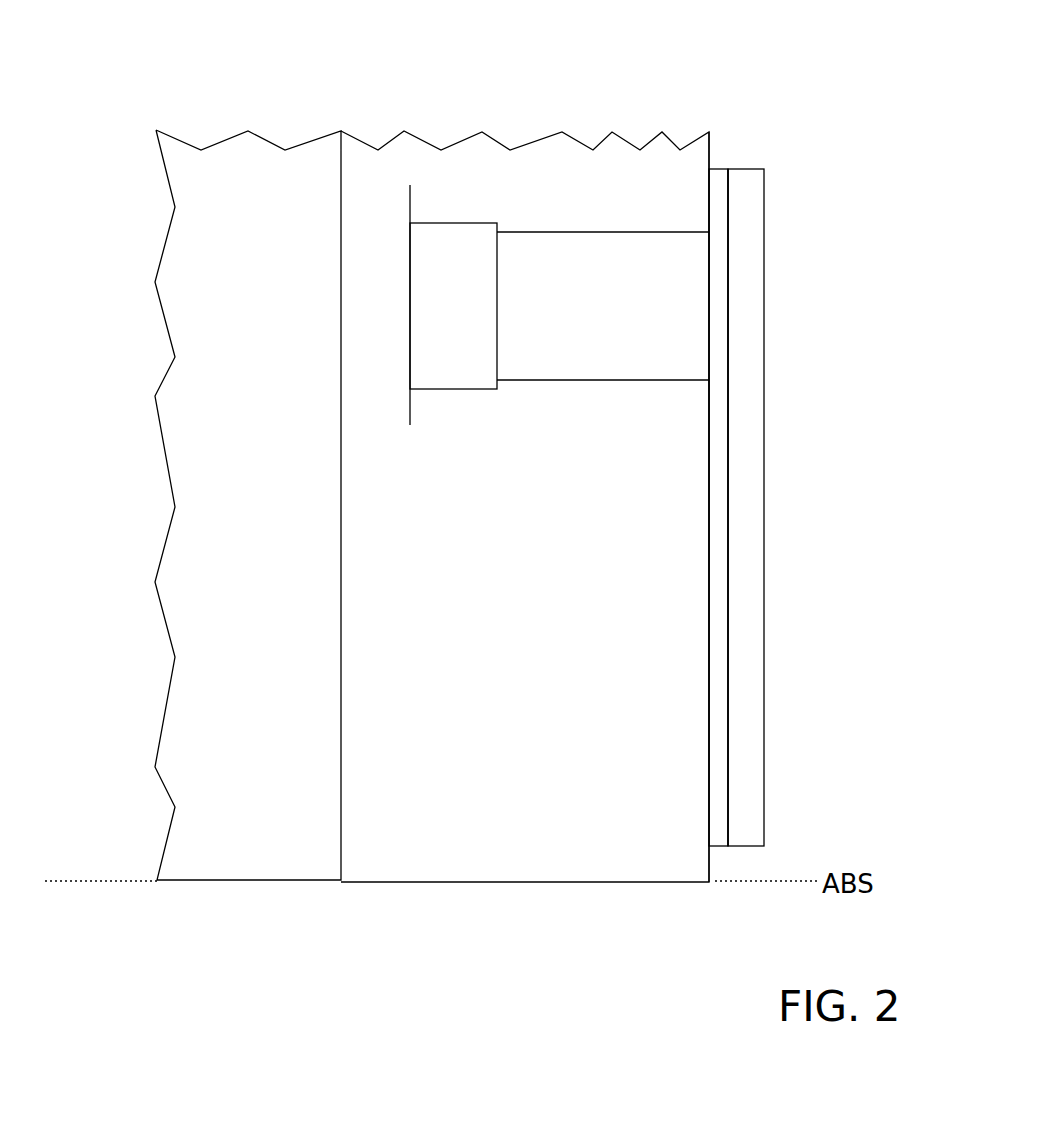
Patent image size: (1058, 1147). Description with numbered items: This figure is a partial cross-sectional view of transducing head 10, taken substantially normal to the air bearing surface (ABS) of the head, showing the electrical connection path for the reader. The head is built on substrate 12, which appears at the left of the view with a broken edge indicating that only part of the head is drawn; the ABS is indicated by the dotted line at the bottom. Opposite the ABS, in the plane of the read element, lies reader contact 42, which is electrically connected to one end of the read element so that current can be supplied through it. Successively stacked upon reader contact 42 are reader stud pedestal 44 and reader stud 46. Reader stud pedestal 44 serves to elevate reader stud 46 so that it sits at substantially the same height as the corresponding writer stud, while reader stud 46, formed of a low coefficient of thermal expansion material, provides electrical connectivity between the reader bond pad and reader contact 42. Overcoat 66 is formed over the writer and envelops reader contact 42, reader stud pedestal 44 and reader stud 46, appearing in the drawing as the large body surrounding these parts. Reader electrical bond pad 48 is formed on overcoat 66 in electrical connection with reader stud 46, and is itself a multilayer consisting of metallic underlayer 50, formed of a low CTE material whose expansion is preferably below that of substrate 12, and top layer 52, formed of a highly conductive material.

The transducing head 10 is at (820, 77).
The substrate 12 is at (230, 792).
The reader contact 42 is at (410, 213).
The reader stud pedestal 44 is at (450, 250).
The reader stud 46 is at (575, 248).
The reader electrical bond pad 48 is at (728, 168).
The metallic underlayer 50 is at (718, 303).
The top layer 52 is at (743, 372).
The overcoat 66 is at (652, 792).